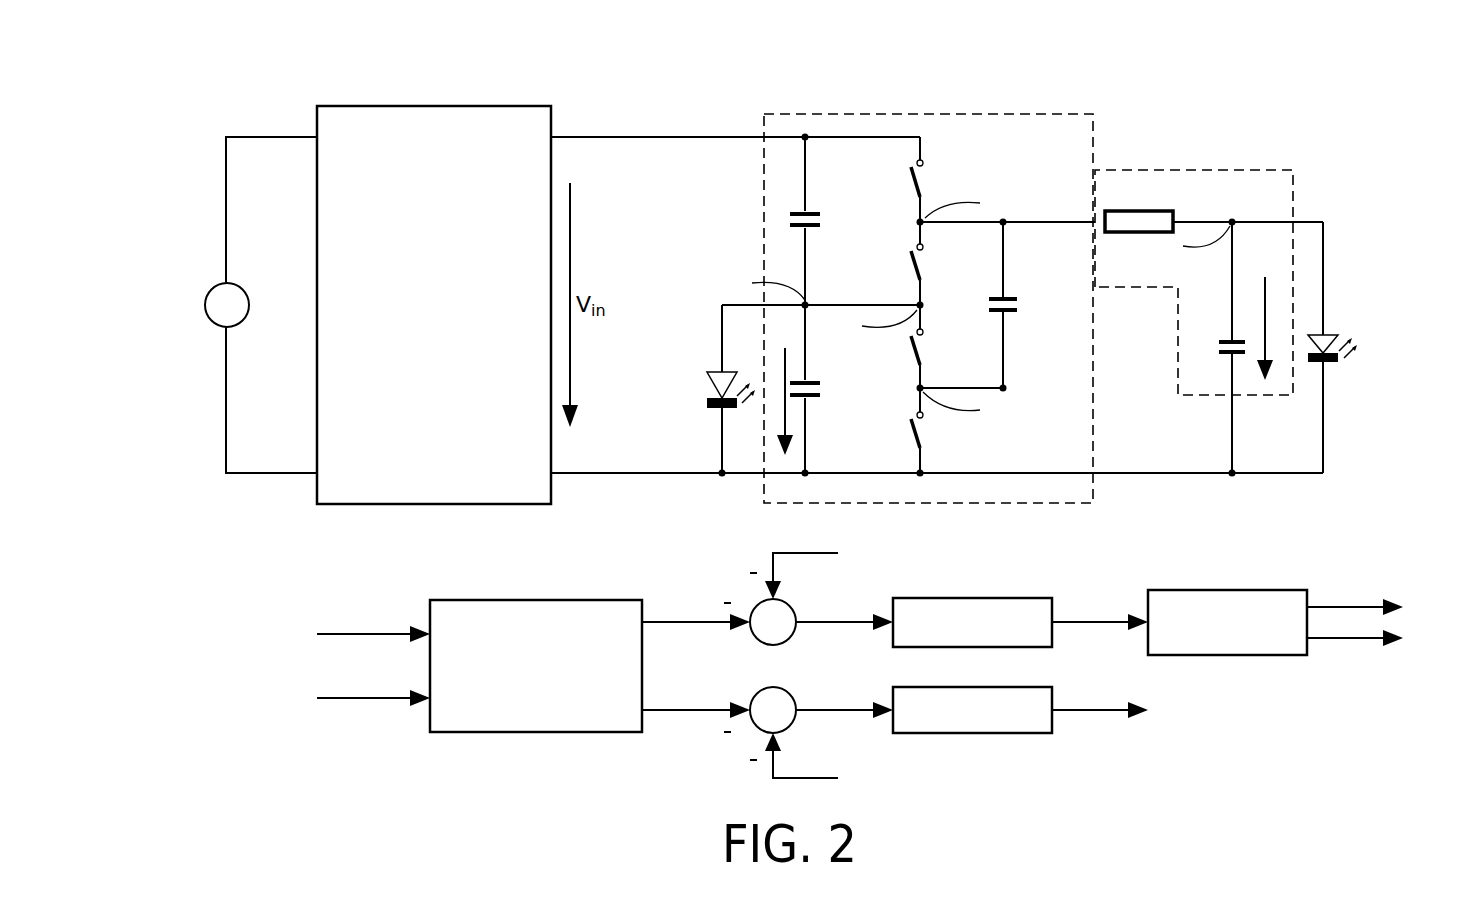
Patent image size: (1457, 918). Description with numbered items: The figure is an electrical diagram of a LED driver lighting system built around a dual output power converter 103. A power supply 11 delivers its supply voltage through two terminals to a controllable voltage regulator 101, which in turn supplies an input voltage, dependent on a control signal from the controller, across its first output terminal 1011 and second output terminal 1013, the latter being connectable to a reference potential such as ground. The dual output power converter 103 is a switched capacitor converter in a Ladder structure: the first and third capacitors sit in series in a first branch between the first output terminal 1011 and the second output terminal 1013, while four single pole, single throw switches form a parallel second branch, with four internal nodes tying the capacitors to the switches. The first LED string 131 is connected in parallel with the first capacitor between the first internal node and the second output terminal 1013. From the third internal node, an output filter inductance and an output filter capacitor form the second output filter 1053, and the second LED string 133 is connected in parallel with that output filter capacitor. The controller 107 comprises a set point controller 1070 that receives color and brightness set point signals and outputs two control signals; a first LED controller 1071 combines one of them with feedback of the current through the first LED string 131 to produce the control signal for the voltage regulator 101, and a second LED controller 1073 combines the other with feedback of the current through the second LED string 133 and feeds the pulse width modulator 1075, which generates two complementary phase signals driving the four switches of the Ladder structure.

The power supply 11 is at (205, 305).
The controllable voltage regulator 101 is at (435, 106).
The first output terminal 1011 is at (551, 137).
The second output terminal 1013 is at (551, 473).
The dual output power converter 103 is at (960, 114).
The second output filter 1053 is at (1200, 170).
The first LED string 131 is at (707, 403).
The second LED string 133 is at (1340, 361).
The controller 107 is at (816, 666).
The set point controller 1070 is at (536, 666).
The first LED controller 1071 is at (972, 710).
The second LED controller 1073 is at (972, 622).
The pulse width modulator 1075 is at (1227, 622).